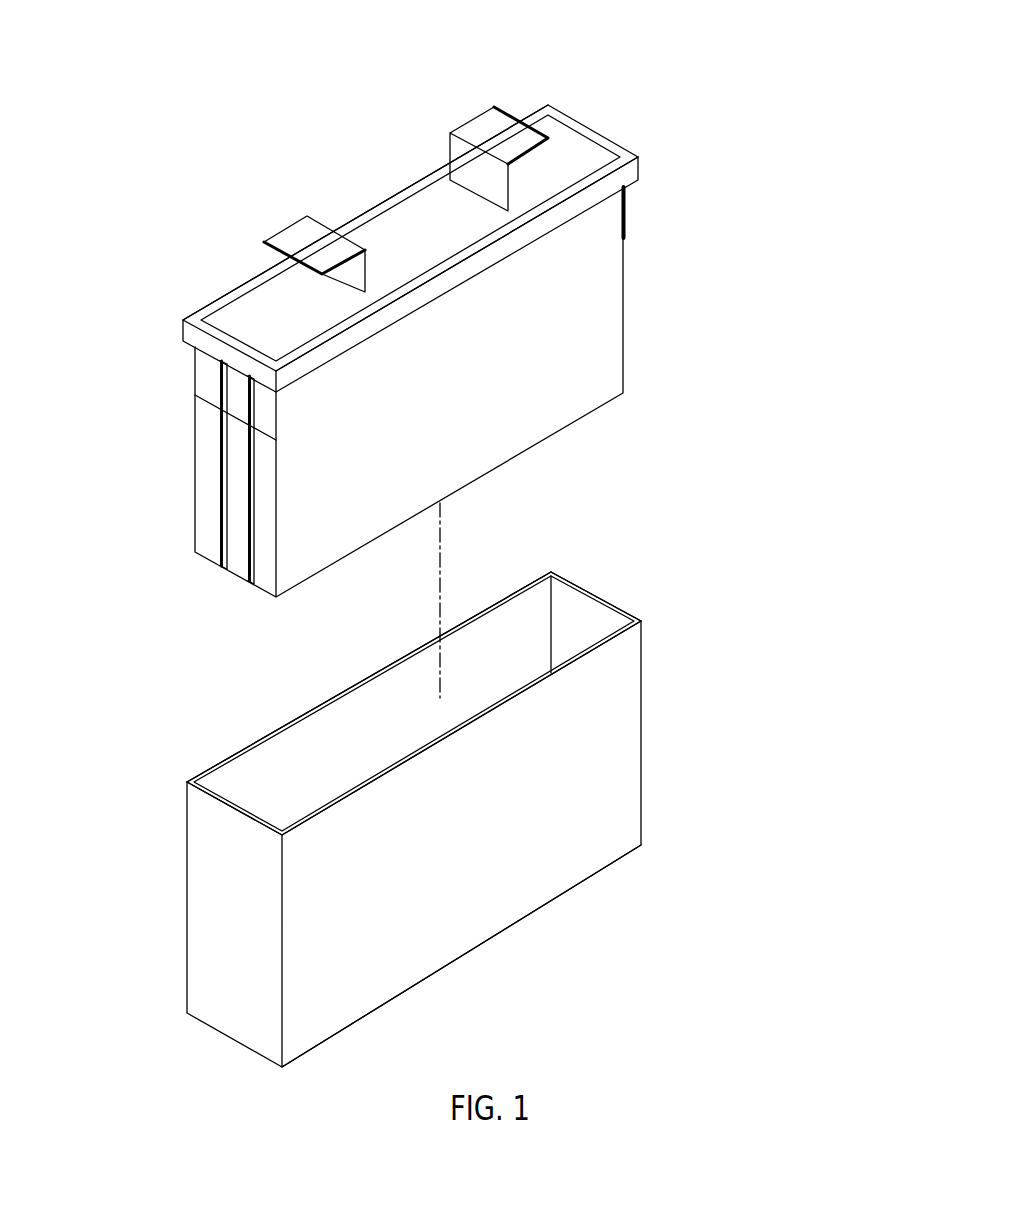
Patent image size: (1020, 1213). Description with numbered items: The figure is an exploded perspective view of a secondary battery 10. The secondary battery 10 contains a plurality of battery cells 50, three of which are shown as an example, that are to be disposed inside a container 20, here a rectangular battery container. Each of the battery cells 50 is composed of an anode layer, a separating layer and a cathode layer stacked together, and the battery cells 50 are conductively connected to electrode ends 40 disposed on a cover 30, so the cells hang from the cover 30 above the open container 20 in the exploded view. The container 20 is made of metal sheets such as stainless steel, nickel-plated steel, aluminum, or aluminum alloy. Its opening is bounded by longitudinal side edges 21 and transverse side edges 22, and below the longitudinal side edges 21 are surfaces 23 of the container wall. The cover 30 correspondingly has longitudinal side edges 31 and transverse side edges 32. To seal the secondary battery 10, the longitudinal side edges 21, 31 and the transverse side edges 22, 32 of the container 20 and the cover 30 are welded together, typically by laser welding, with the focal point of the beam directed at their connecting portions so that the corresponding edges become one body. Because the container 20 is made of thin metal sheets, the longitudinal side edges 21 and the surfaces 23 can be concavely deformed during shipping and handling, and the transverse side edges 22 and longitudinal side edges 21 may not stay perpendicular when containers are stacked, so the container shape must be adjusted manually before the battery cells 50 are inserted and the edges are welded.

The secondary battery 10 is at (72, 378).
The container 20 is at (652, 724).
The longitudinal side edges 21 is at (350, 684).
The transverse side edges 22 is at (597, 593).
The surfaces 23 is at (562, 868).
The cover 30 is at (572, 145).
The longitudinal side edges 31 is at (397, 188).
The transverse side edges 32 is at (607, 135).
The electrode ends 40 is at (483, 123).
The battery cells 50 is at (270, 583).